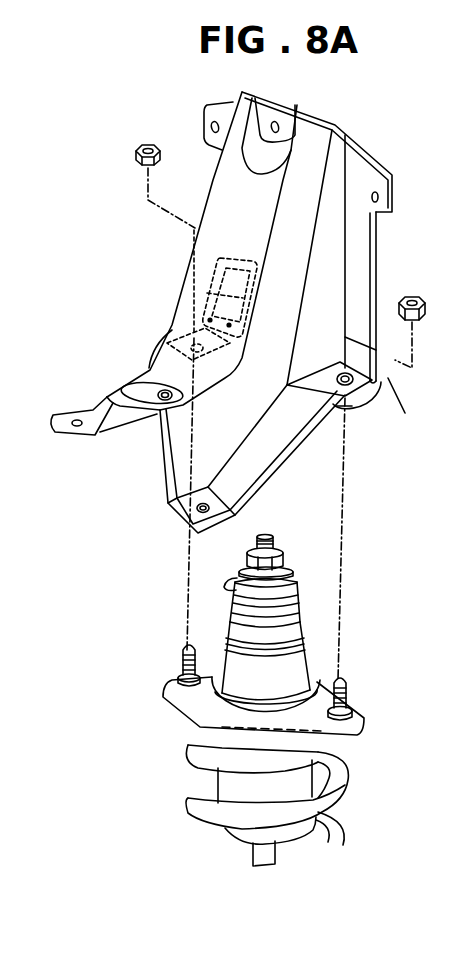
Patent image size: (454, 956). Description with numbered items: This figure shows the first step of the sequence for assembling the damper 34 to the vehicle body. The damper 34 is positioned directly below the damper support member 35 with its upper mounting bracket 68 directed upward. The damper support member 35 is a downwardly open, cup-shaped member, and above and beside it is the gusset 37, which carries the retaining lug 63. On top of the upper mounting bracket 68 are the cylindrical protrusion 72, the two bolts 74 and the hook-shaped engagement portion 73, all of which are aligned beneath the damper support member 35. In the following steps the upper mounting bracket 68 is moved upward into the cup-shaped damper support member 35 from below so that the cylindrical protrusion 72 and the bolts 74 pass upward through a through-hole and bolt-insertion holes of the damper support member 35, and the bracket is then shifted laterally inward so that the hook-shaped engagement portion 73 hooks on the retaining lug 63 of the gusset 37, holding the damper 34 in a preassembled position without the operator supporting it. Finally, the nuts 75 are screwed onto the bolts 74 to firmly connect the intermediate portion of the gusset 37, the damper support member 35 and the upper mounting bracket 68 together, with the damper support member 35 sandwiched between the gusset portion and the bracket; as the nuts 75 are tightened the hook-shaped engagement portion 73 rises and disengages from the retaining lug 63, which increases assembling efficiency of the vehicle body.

The damper 34 is at (147, 695).
The damper support member 35 is at (372, 405).
The gusset 37 is at (170, 302).
The retaining lug 63 is at (243, 257).
The upper mounting bracket 68 is at (312, 596).
The cylindrical protrusion 72 is at (290, 638).
The hook-shaped engagement portion 73 is at (233, 582).
The bolts 74 is at (182, 647).
The nuts 75 is at (147, 143).